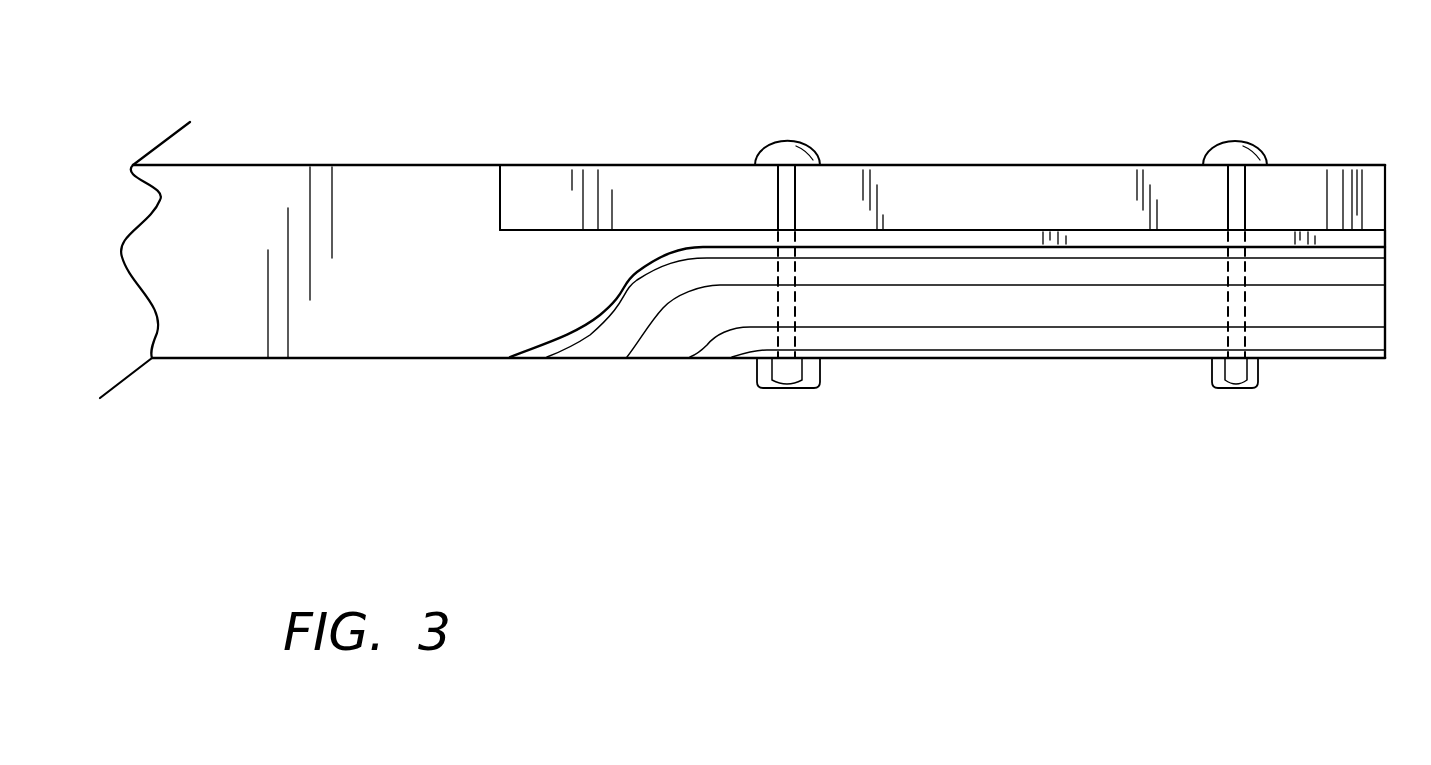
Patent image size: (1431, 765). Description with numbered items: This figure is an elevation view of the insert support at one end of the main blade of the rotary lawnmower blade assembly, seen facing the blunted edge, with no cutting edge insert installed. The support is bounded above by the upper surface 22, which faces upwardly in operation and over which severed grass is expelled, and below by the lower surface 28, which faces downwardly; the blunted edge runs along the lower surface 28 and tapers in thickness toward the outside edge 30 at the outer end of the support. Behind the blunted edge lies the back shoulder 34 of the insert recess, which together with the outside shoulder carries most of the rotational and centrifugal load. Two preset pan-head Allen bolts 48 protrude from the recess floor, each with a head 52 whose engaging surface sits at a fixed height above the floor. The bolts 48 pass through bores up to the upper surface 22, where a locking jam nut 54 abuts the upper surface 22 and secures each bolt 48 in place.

The upper surface 22 is at (863, 360).
The lower surface 28 is at (385, 165).
The outside edge 30 is at (1388, 230).
The back shoulder 34 is at (500, 195).
The bolt 48 is at (796, 200).
The head 52 is at (772, 157).
The locking jam nut 54 is at (782, 390).